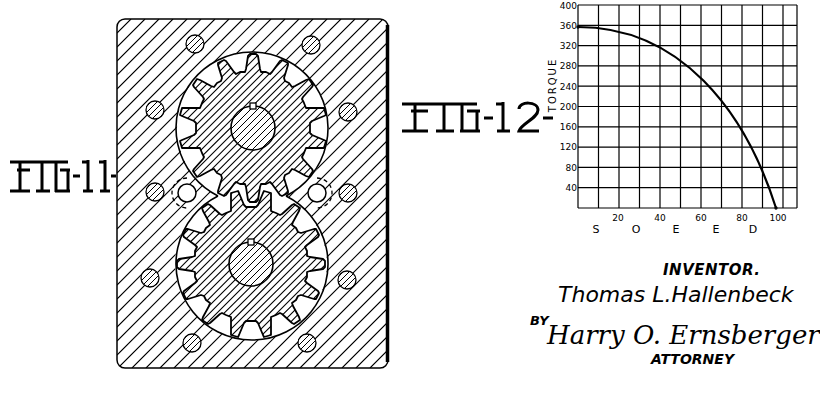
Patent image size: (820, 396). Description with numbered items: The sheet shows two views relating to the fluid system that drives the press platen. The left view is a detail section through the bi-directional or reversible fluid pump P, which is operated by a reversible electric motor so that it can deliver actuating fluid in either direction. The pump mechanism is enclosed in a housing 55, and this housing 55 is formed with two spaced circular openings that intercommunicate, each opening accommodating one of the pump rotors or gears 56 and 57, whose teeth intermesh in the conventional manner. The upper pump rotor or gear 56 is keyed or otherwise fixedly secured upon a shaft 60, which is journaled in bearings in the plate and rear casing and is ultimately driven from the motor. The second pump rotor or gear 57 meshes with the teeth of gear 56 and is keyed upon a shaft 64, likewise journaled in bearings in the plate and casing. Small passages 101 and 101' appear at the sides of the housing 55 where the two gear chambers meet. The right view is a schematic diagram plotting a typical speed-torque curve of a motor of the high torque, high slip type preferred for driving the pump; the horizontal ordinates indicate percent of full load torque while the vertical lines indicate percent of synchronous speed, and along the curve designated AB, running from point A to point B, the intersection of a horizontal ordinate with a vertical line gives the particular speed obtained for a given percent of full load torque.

In FIG. 11, the housing 55 is at (388, 213).
In FIG. 11, the pump rotor or gear 56 is at (308, 82).
In FIG. 11, the pump rotor or gear 57 is at (324, 258).
In FIG. 11, the shaft 60 is at (236, 127).
In FIG. 11, the shaft 64 is at (236, 278).
In FIG. 11, the pressure relief port 101 is at (372, 184).
In FIG. 11, the pressure relief port 101' is at (130, 208).
In FIG. 11, the fluid pump P is at (388, 304).
In FIG. 12, the speed-torque curve end point A is at (559, 26).
In FIG. 12, the speed-torque curve end point B is at (777, 226).